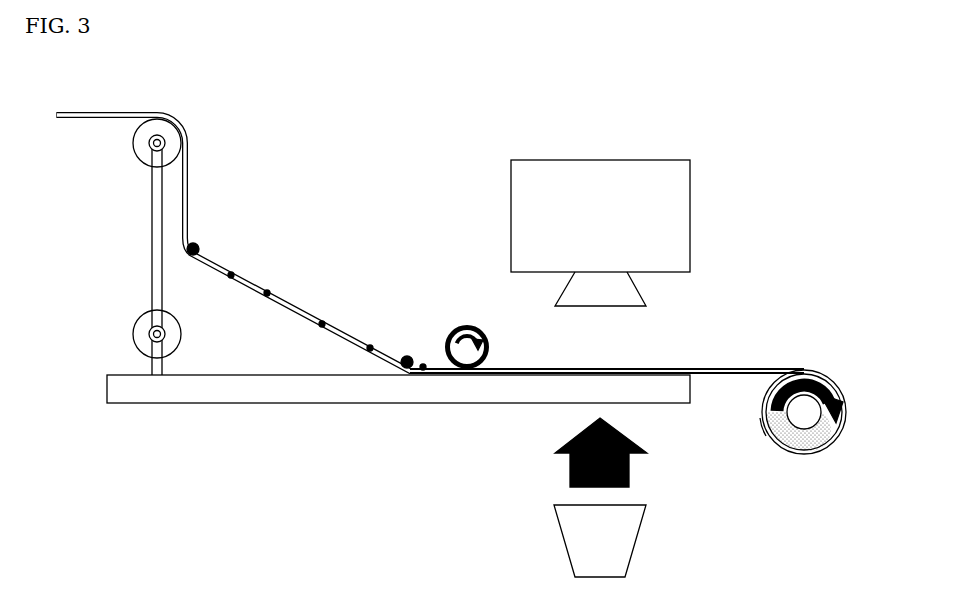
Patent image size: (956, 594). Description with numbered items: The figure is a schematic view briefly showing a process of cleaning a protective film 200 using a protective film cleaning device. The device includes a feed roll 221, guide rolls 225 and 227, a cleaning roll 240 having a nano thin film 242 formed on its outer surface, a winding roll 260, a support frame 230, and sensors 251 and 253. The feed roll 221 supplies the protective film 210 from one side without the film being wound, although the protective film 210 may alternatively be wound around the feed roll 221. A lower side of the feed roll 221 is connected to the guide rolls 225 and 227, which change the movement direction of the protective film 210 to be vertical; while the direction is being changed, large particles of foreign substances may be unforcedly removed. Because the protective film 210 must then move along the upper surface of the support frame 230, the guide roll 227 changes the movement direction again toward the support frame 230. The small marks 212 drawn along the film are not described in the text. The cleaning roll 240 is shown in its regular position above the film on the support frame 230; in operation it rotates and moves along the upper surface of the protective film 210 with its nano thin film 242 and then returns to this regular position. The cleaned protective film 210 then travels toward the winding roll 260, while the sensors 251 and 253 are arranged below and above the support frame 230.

The protective film 200 is at (102, 105).
The protective film 210 is at (677, 368).
The particles on film 212 is at (269, 291).
The feed roll 221 is at (173, 145).
The guide roll 225 is at (198, 246).
The guide roll 227 is at (405, 356).
The support frame 230 is at (278, 394).
The cleaning roll 240 is at (446, 318).
The nano thin film 242 is at (487, 327).
The sensor 251 is at (622, 547).
The sensor 253 is at (535, 175).
The winding roll 260 is at (770, 435).